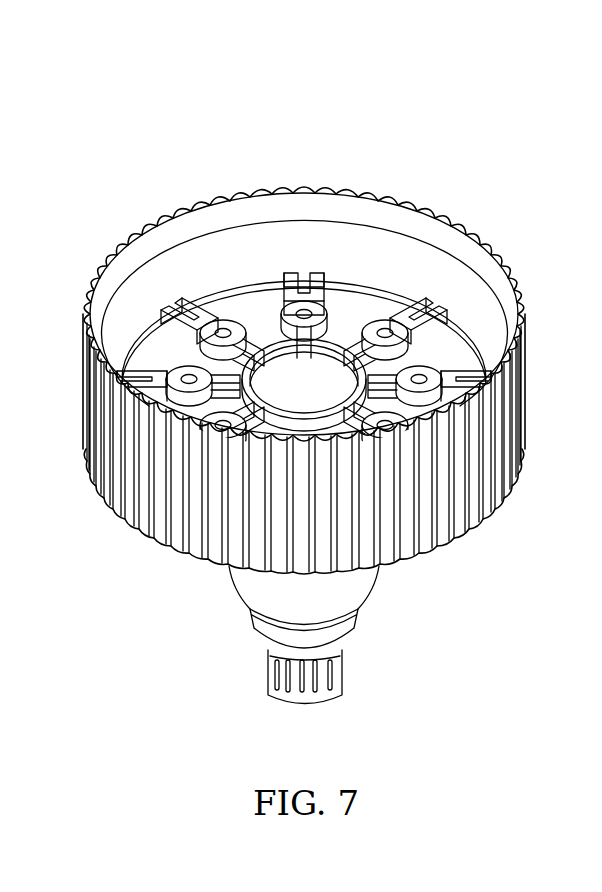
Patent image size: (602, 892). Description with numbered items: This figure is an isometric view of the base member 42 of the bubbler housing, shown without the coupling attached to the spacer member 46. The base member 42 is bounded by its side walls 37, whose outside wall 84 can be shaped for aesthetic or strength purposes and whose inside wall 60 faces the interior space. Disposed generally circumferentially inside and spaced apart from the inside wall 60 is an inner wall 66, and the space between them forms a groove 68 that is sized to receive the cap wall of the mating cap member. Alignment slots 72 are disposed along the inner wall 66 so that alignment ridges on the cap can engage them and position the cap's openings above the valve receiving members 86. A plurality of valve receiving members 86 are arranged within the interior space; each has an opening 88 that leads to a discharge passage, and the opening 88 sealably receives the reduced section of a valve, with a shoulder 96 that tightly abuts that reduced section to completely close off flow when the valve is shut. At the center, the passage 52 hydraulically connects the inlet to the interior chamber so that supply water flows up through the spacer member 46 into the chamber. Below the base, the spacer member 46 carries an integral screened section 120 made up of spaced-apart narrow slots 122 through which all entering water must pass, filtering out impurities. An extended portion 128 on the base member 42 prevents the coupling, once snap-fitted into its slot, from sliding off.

The base member 42 is at (418, 114).
The side walls 37 is at (132, 484).
The outside wall 84 is at (500, 423).
The inside wall 60 is at (268, 240).
The passage 52 is at (332, 387).
The valve receiving members 86 is at (405, 356).
The inner wall 66 is at (368, 282).
The alignment slots 72 is at (304, 272).
The shoulder 96 is at (268, 274).
The opening 88 is at (218, 325).
The groove 68 is at (122, 349).
The spacer member 46 is at (353, 590).
The extended portion 128 is at (250, 618).
The screened section 120 is at (347, 668).
The narrow slots 122 is at (283, 692).